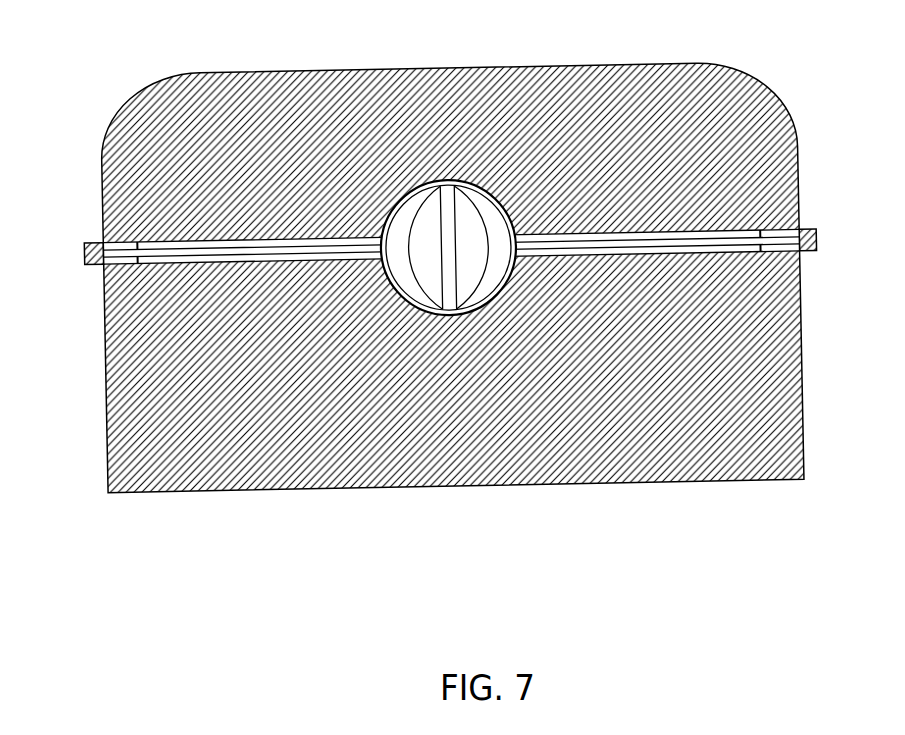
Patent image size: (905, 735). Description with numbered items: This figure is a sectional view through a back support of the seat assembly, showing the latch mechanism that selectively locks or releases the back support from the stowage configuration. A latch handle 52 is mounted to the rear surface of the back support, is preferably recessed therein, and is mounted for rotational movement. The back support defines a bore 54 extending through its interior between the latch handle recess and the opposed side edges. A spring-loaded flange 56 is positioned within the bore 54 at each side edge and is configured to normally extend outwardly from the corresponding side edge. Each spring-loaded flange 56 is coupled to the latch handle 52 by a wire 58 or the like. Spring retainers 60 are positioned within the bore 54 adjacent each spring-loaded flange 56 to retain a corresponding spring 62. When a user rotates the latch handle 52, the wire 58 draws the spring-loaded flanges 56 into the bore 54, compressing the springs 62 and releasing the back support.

The latch handle 52 is at (441, 207).
The bore 54 is at (241, 242).
The spring-loaded flange 56 is at (85, 252).
The wire 58 is at (327, 242).
The spring retainer 60 is at (110, 267).
The spring 62 is at (122, 248).